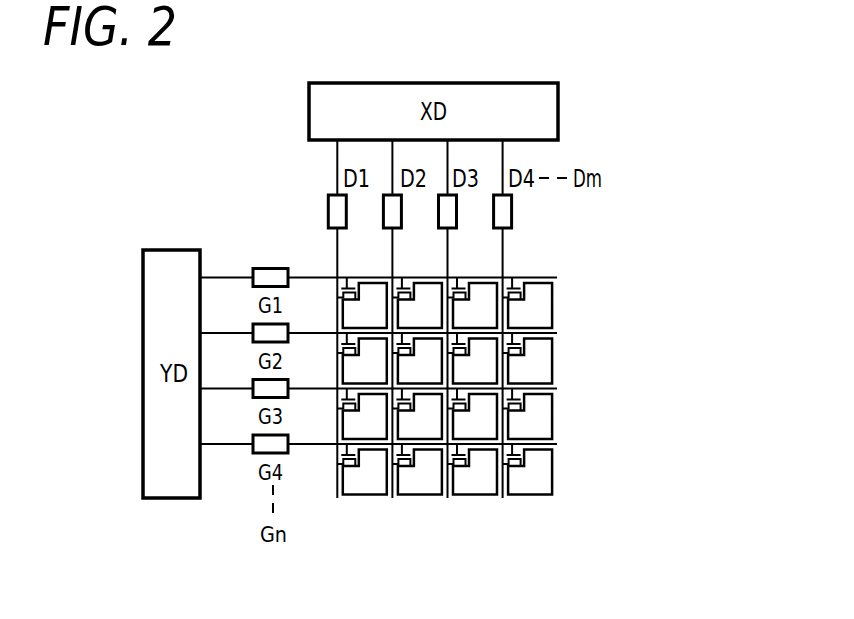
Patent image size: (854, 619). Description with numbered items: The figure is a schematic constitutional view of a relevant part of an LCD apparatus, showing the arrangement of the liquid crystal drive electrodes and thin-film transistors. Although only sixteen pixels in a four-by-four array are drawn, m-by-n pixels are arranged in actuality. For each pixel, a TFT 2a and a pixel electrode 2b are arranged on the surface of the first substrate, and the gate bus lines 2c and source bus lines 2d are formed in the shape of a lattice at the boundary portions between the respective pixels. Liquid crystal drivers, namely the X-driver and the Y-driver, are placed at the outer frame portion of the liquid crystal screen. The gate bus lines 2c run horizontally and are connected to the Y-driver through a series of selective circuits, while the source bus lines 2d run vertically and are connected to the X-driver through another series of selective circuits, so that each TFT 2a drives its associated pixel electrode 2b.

The TFT 2a is at (528, 266).
The pixel electrode 2b is at (543, 305).
The gate bus line 2c is at (552, 390).
The source bus line 2d is at (448, 498).